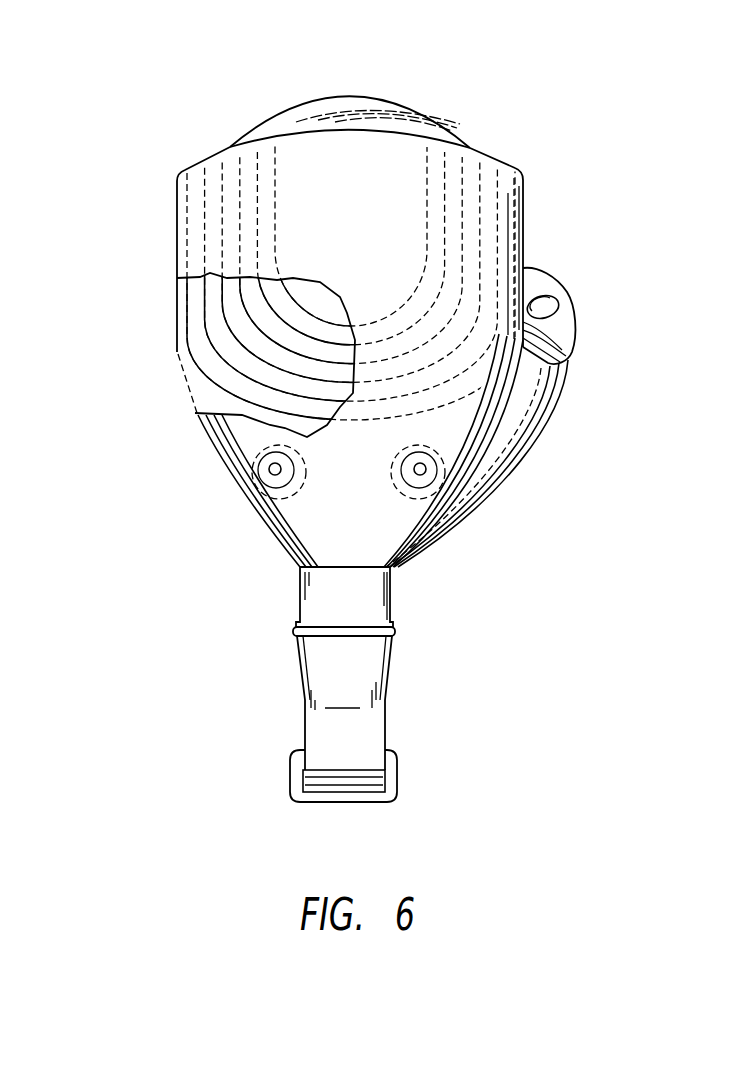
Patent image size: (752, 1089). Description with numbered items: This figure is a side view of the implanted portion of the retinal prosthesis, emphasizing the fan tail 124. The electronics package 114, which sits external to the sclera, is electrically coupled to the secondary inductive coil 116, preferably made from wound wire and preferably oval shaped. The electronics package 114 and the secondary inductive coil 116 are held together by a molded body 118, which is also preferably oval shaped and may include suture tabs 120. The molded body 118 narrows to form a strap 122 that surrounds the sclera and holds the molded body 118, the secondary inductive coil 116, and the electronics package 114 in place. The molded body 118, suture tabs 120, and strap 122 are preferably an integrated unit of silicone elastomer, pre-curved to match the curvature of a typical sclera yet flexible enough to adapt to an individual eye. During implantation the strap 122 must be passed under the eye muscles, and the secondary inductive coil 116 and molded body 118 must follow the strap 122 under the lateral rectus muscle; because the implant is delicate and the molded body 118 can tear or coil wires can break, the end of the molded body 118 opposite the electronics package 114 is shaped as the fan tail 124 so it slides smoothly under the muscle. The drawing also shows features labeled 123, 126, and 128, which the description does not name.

The electronics package 114 is at (352, 96).
The secondary inductive coil 116 is at (178, 351).
The molded body 118 is at (527, 192).
The suture tabs 120 is at (572, 302).
The strap 122 is at (390, 604).
The retaining clip 123 is at (398, 797).
The fan tail 124 is at (121, 418).
The fastener bosses 126 is at (288, 495).
The outlet connector 128 is at (395, 672).